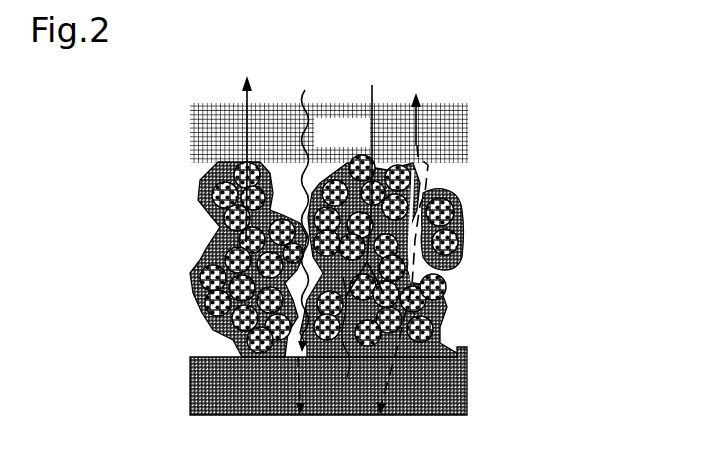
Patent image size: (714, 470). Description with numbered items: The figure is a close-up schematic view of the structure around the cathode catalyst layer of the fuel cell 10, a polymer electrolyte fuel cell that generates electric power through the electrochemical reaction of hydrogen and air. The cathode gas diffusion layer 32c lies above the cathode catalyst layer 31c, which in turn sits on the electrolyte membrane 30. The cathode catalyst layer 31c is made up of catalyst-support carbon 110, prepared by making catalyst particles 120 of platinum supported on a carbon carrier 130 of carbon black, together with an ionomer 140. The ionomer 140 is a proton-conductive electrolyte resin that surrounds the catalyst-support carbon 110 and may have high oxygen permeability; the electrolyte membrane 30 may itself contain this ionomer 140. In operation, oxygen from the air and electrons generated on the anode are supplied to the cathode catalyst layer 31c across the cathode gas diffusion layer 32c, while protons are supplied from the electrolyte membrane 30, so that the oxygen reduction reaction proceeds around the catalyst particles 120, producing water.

The fuel cell 10 is at (505, 96).
The electrolyte membrane 30 is at (468, 383).
The cathode catalyst layer 31c is at (430, 256).
The cathode gas diffusion layer 32c is at (469, 130).
The catalyst-support carbon 110 is at (517, 221).
The catalyst particles 120 is at (443, 197).
The carbon carrier 130 is at (470, 233).
The ionomer 140 is at (463, 262).